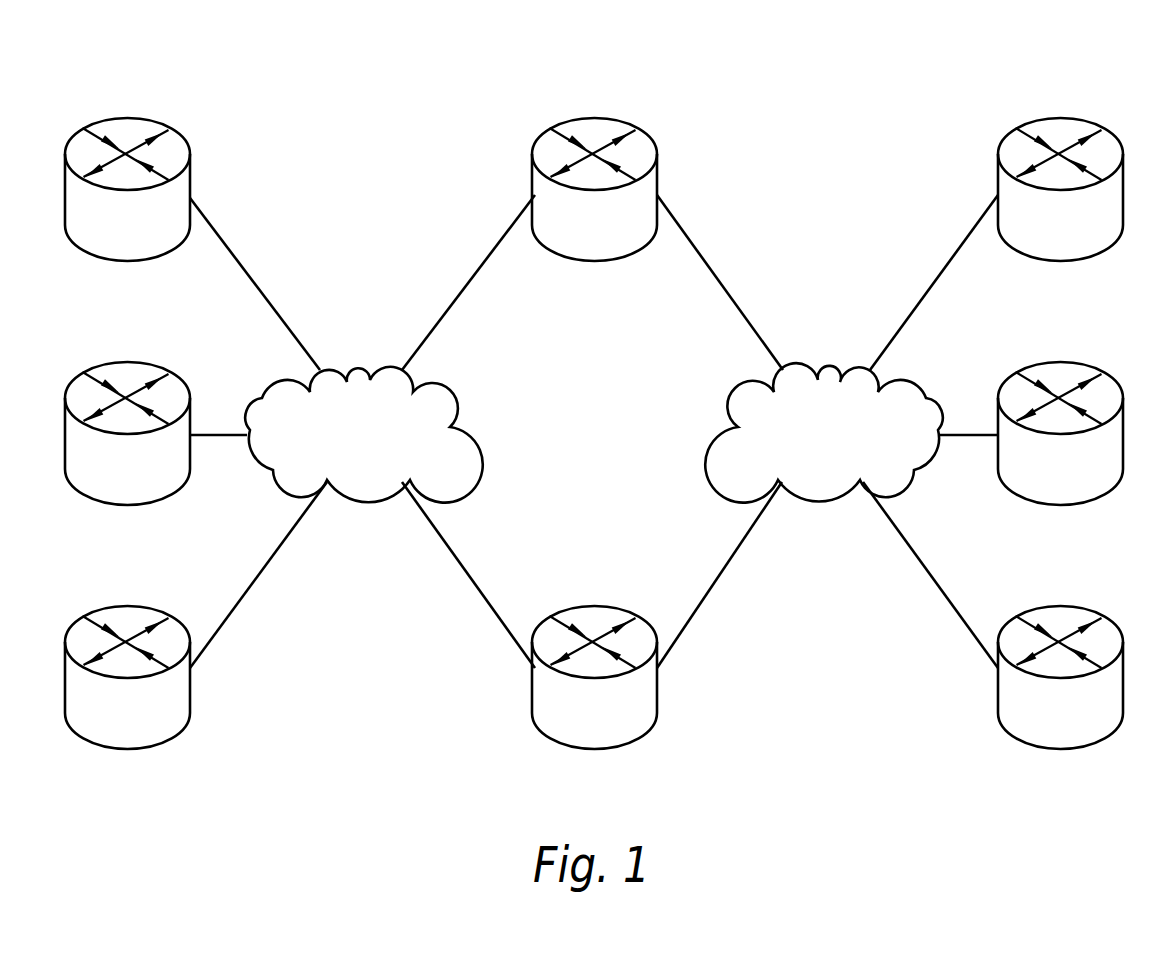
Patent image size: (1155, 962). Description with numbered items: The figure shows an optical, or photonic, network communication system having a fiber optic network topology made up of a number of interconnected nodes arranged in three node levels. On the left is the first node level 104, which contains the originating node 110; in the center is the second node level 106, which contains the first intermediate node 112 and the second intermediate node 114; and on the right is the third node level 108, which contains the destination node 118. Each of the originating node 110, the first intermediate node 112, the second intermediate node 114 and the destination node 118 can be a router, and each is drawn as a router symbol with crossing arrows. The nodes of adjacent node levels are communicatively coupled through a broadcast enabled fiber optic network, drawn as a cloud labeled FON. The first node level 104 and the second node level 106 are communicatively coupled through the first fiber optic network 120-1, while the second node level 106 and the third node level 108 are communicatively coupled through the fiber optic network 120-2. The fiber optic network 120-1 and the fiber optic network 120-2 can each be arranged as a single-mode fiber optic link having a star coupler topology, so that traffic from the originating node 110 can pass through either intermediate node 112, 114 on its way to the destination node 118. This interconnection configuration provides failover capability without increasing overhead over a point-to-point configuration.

The first node level 104 is at (127, 387).
The second node level 106 is at (594, 387).
The third node level 108 is at (1060, 387).
The originating node 110 is at (127, 169).
The first intermediate node 112 is at (594, 169).
The second intermediate node 114 is at (594, 658).
The destination node 118 is at (1060, 414).
The first fiber optic network 120-1 is at (363, 415).
The fiber optic network 120-2 is at (823, 415).